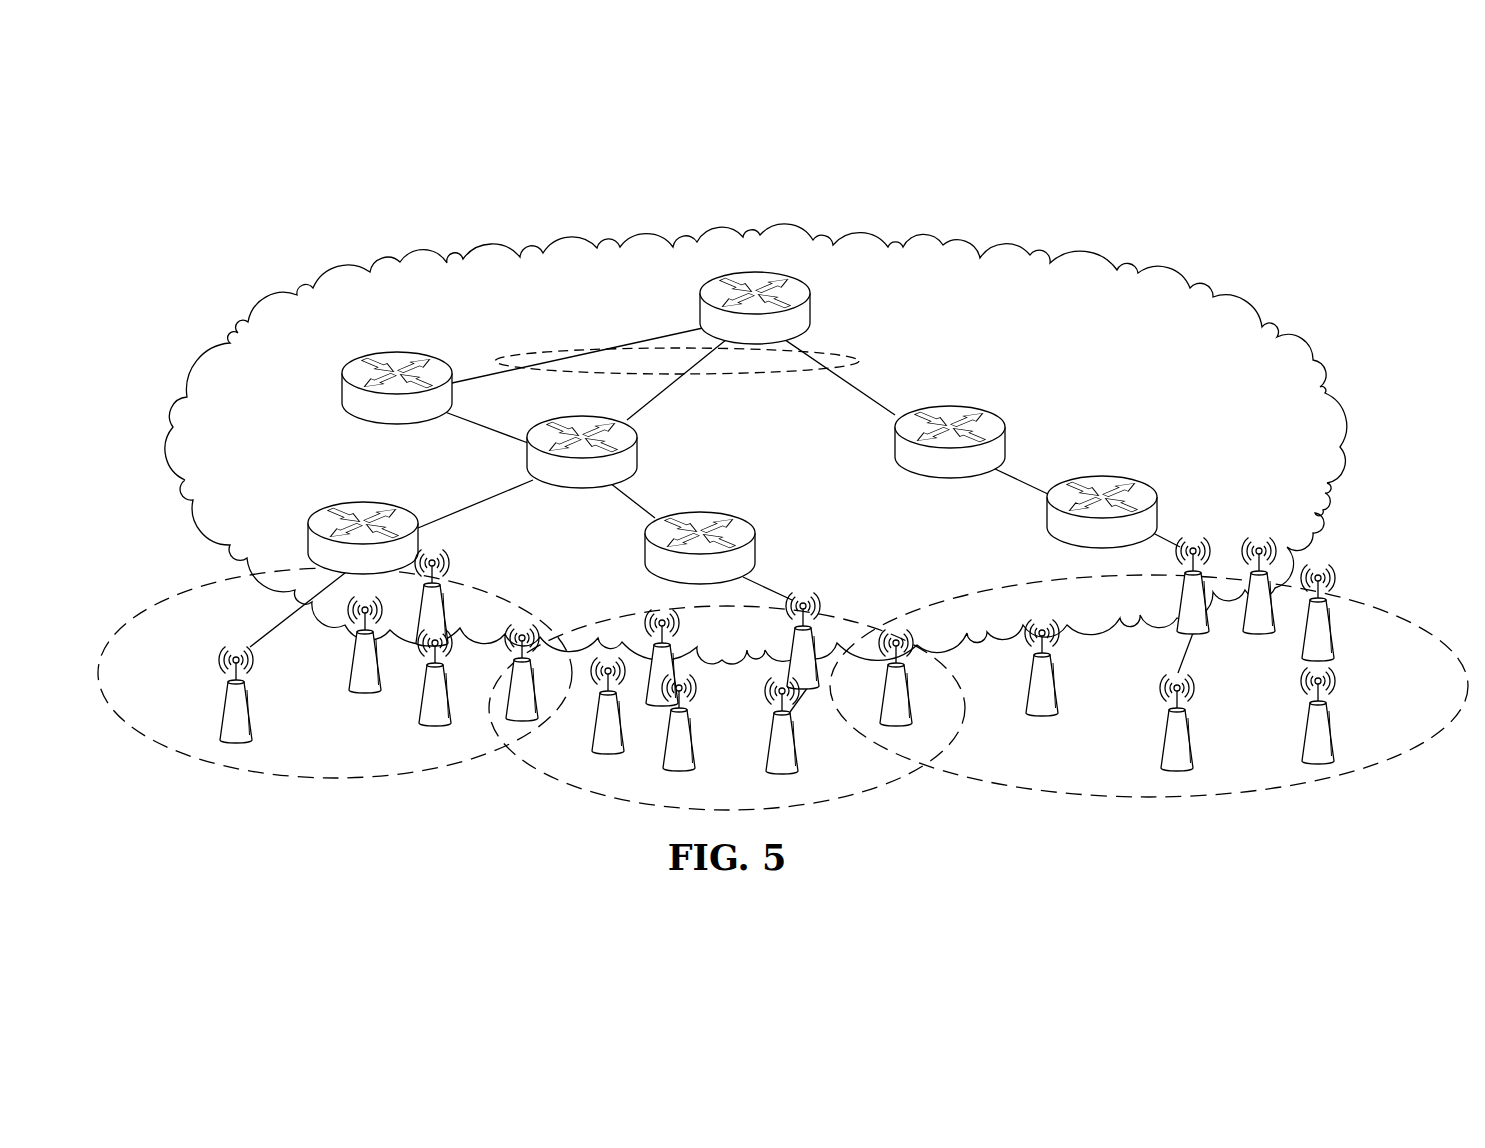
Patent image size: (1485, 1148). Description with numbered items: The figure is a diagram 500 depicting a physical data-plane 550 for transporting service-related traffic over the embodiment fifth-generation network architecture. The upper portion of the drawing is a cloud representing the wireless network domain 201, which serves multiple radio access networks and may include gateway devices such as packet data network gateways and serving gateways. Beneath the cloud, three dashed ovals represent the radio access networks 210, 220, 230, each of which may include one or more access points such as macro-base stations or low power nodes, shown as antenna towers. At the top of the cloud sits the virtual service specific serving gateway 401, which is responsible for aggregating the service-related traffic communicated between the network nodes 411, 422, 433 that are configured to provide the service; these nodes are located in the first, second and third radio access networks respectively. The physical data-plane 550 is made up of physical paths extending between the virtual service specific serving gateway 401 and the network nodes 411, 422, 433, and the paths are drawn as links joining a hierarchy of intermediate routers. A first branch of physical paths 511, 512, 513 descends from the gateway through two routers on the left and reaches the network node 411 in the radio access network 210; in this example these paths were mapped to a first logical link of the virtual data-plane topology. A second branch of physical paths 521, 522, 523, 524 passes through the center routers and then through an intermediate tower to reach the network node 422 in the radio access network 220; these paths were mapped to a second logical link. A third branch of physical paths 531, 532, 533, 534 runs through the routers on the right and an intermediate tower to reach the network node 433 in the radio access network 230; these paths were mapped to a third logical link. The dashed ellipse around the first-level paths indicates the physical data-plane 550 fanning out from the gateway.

The diagram 500 is at (756, 399).
The wireless network domain 201 is at (642, 230).
The virtual service specific serving gateway (v-s-SGW) 401 is at (812, 296).
The physical path 511 is at (664, 333).
The physical path 521 is at (660, 397).
The physical path 531 is at (866, 396).
The physical path 512 is at (486, 426).
The physical path 522 is at (642, 507).
The physical path 532 is at (1022, 482).
The physical path 513 is at (492, 497).
The physical path 523 is at (770, 590).
The physical path 533 is at (1166, 540).
The physical path 524 is at (812, 712).
The physical path 534 is at (1190, 654).
The network node 411 is at (221, 712).
The network node 422 is at (763, 760).
The network node 433 is at (1193, 740).
The physical data-plane 550 is at (858, 366).
The radio access network (RAN) 210 is at (258, 769).
The radio access network (RAN) 220 is at (618, 805).
The radio access network (RAN) 230 is at (1247, 795).